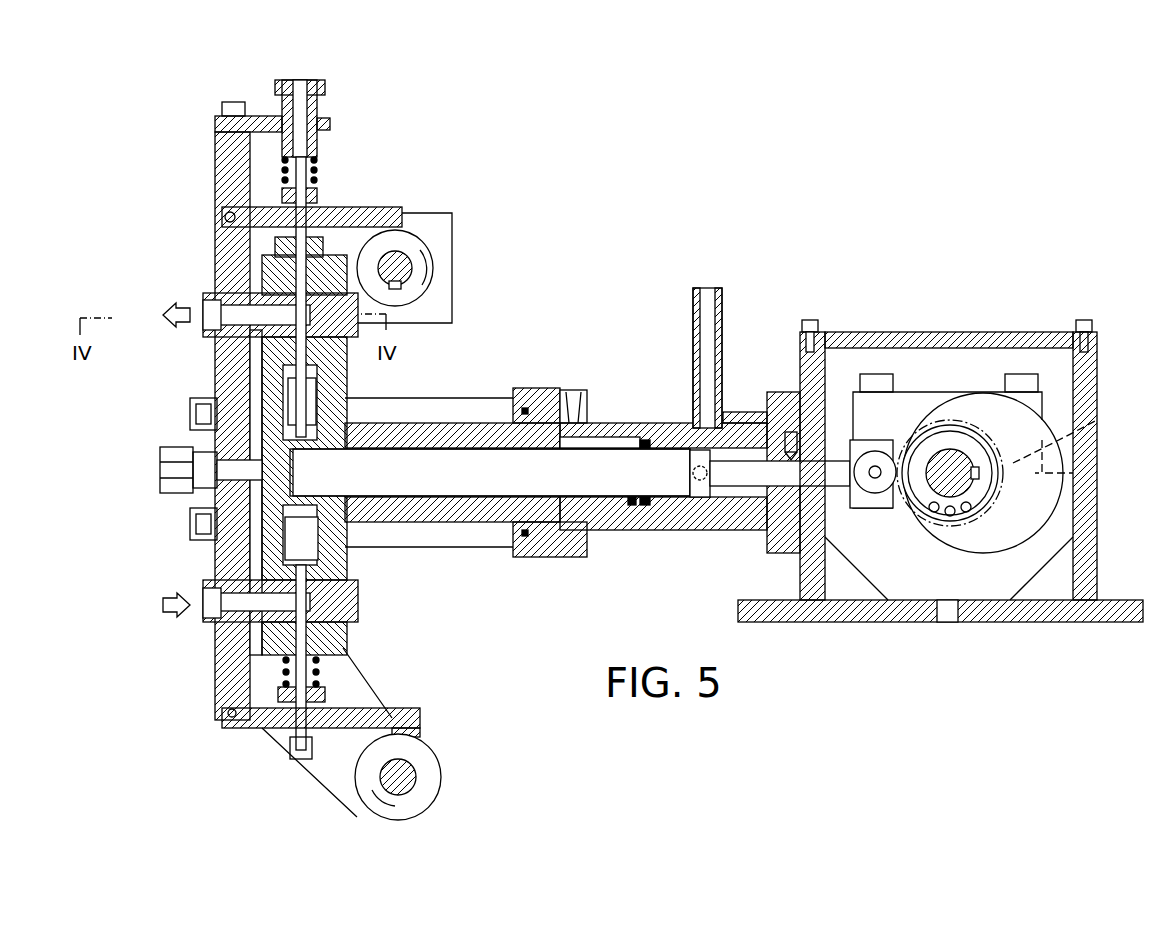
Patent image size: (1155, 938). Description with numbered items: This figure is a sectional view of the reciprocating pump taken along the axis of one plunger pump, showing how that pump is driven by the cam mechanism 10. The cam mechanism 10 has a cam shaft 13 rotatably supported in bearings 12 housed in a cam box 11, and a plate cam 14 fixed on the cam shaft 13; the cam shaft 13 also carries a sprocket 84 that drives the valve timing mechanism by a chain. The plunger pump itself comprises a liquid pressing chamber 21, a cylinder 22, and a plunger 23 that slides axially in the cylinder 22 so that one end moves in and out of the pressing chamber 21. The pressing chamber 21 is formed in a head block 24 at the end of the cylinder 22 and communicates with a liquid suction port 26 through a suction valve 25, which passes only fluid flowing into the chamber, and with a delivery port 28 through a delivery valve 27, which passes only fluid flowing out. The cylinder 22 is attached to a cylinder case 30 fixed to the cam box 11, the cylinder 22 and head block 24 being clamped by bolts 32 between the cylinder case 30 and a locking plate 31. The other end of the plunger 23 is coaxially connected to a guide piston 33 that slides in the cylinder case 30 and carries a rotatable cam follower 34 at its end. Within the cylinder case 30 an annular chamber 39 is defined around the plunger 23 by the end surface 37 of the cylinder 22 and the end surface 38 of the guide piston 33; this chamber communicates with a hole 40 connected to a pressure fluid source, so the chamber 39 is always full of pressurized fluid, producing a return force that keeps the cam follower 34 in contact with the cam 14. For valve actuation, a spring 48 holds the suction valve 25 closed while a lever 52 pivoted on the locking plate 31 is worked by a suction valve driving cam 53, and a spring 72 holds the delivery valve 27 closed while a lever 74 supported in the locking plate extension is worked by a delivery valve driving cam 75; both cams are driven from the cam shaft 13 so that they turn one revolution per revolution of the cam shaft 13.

The cam mechanism 10 is at (1007, 325).
The cam box 11 is at (1093, 378).
The bearings 12 is at (1097, 424).
The cam shaft 13 is at (925, 487).
The plate cam 14 is at (972, 553).
The liquid pressing chamber 21 is at (336, 481).
The cylinder 22 is at (410, 423).
The plunger 23 is at (450, 450).
The head block 24 is at (262, 505).
The suction valve 25 is at (262, 565).
The liquid suction port 26 is at (207, 605).
The delivery valve 27 is at (275, 380).
The delivery port 28 is at (207, 312).
The cylinder case 30 is at (700, 530).
The locking plate 31 is at (230, 400).
The bolts 32 is at (485, 400).
The guide piston 33 is at (742, 430).
The cam follower 34 is at (876, 451).
The end surface of the cylinder 37 is at (562, 505).
The end surface of the guide piston 38 is at (628, 505).
The annular chamber 39 is at (600, 505).
The hole 40 is at (565, 405).
The spring 48 is at (318, 663).
The lever 52 is at (415, 708).
The suction valve driving cam 53 is at (437, 768).
The spring 72 is at (318, 171).
The lever 74 is at (372, 205).
The delivery valve driving cam 75 is at (433, 265).
The sprocket 84 is at (945, 515).